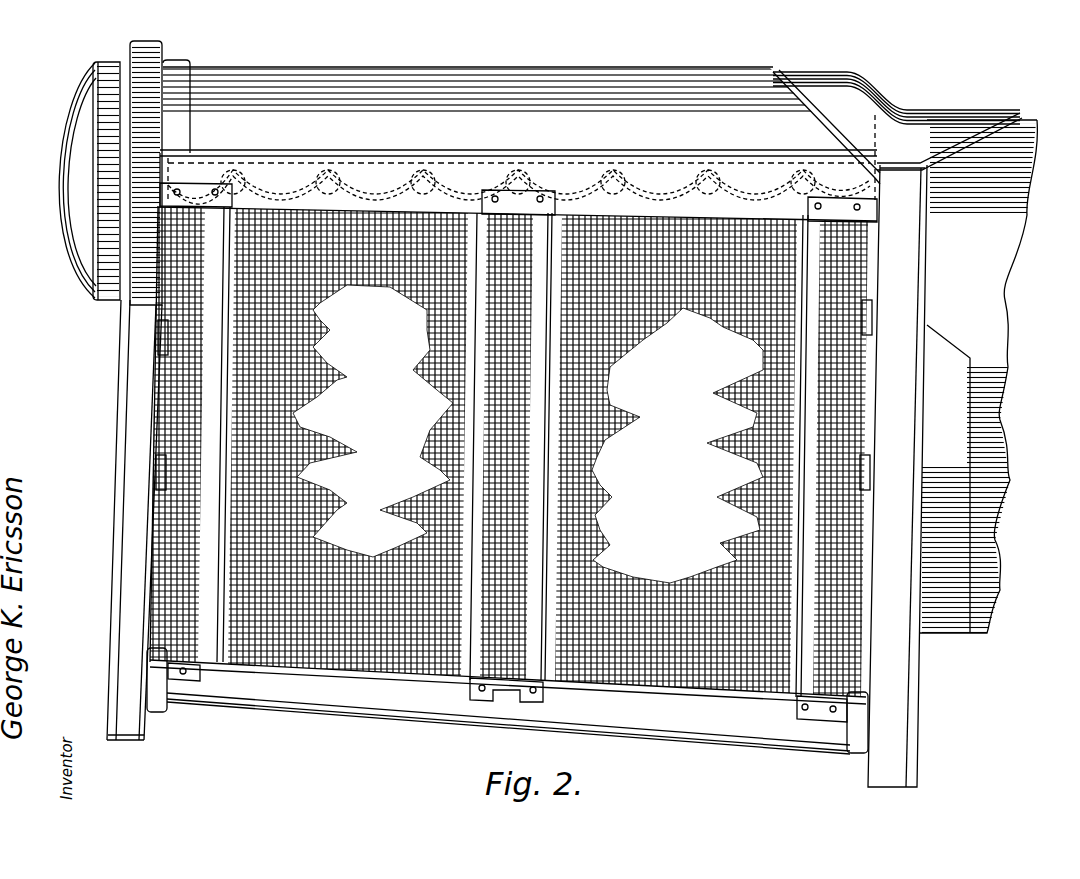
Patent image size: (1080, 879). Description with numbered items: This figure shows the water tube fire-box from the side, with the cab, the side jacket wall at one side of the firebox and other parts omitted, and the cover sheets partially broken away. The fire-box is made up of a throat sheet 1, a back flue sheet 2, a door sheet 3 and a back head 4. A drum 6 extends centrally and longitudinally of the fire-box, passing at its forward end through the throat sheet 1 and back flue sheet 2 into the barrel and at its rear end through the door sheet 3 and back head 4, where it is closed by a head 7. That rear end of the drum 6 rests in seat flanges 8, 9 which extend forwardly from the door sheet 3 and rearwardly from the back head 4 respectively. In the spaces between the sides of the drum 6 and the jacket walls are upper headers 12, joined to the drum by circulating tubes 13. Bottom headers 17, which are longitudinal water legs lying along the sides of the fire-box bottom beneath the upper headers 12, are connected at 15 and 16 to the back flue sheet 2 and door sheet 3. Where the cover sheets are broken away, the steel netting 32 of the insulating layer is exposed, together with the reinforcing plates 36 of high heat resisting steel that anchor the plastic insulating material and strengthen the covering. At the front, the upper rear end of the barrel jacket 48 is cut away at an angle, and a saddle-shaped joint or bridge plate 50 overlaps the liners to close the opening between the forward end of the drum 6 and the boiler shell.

The throat sheet 1 is at (918, 686).
The back flue sheet 2 is at (866, 646).
The door sheet 3 is at (166, 600).
The back head 4 is at (108, 570).
The drum 6 is at (513, 80).
The head 7 is at (72, 207).
The seat flange 8 is at (170, 66).
The seat flange 9 is at (113, 60).
The upper header 12 is at (458, 172).
The circulating tube 13 is at (372, 166).
The connection to back flue sheet 15 is at (856, 748).
The connection to door sheet 16 is at (150, 712).
The bottom header 17 is at (412, 700).
The steel netting 32 is at (528, 434).
The reinforcing plate 36 is at (216, 313).
The barrel jacket 48 is at (995, 228).
The joint or bridge plate 50 is at (897, 101).